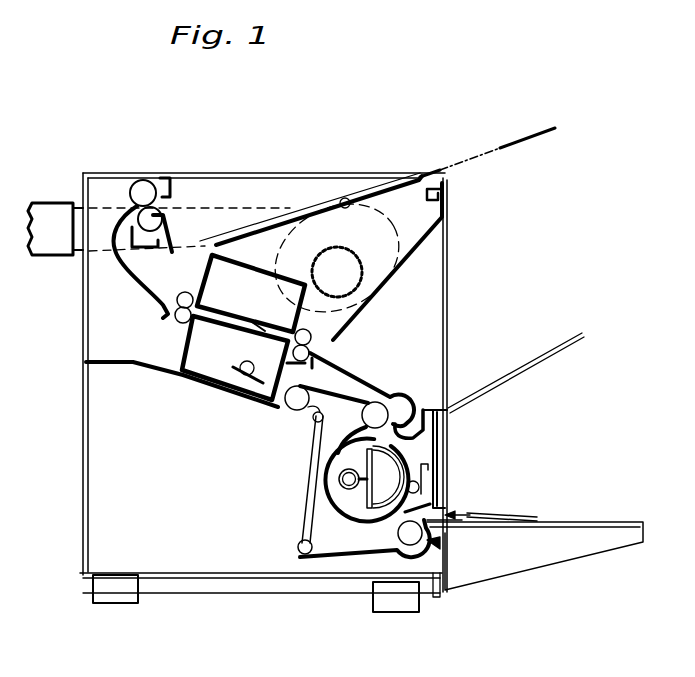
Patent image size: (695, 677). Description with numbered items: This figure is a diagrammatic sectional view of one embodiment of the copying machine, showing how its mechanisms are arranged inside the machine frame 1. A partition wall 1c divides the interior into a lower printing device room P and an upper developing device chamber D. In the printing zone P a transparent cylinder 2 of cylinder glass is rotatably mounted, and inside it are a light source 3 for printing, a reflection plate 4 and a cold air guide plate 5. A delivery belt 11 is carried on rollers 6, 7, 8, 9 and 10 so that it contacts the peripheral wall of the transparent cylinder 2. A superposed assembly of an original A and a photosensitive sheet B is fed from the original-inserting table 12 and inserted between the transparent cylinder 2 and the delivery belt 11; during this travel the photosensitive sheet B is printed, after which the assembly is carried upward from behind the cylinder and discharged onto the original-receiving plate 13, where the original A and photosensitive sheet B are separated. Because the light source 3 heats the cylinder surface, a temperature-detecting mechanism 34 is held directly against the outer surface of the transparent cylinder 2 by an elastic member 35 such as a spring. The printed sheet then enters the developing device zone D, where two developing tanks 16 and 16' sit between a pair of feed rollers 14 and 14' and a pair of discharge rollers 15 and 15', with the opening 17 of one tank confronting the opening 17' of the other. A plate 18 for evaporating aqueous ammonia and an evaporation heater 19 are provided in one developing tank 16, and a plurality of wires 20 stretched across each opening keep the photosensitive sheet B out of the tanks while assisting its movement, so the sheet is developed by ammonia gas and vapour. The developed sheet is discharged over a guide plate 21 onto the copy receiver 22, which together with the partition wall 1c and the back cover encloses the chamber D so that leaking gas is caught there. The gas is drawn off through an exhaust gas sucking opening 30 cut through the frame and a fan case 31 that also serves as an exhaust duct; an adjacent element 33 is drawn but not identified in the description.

The machine frame 1 is at (302, 173).
The partition wall 1c is at (100, 367).
The transparent cylinder 2 is at (430, 438).
The light source 3 is at (350, 490).
The reflection plate 4 is at (382, 478).
The cold air guide plate 5 is at (390, 468).
The roller 6 is at (412, 540).
The roller 7 is at (303, 556).
The roller 8 is at (317, 423).
The roller 9 is at (292, 410).
The roller 10 is at (390, 402).
The delivery belt 11 is at (332, 558).
The original-inserting table 12 is at (640, 527).
The original-receiving plate 13 is at (528, 370).
The feed roller 14 is at (390, 310).
The feed roller 14' is at (391, 366).
The discharge roller 15 is at (114, 287).
The discharge roller 15' is at (113, 313).
The developing tank 16 is at (170, 358).
The developing tank 16' is at (247, 228).
The opening 17 is at (240, 215).
The opening 17' is at (187, 380).
The plate for evaporating aqueous ammonia 18 is at (253, 382).
The evaporation heater 19 is at (240, 370).
The wires 20 is at (258, 335).
The guide plate 21 is at (132, 206).
The copy receiver 22 is at (183, 245).
The exhaust gas sucking opening 30 is at (313, 268).
The fan case 31 is at (403, 178).
The optical unit 33 is at (370, 200).
The temperature-detecting mechanism 34 is at (440, 505).
The elastic member 35 is at (428, 483).
The original A is at (533, 515).
The photosensitive sheet B is at (527, 523).
The developing device zone D is at (303, 327).
The printing device zone P is at (440, 546).